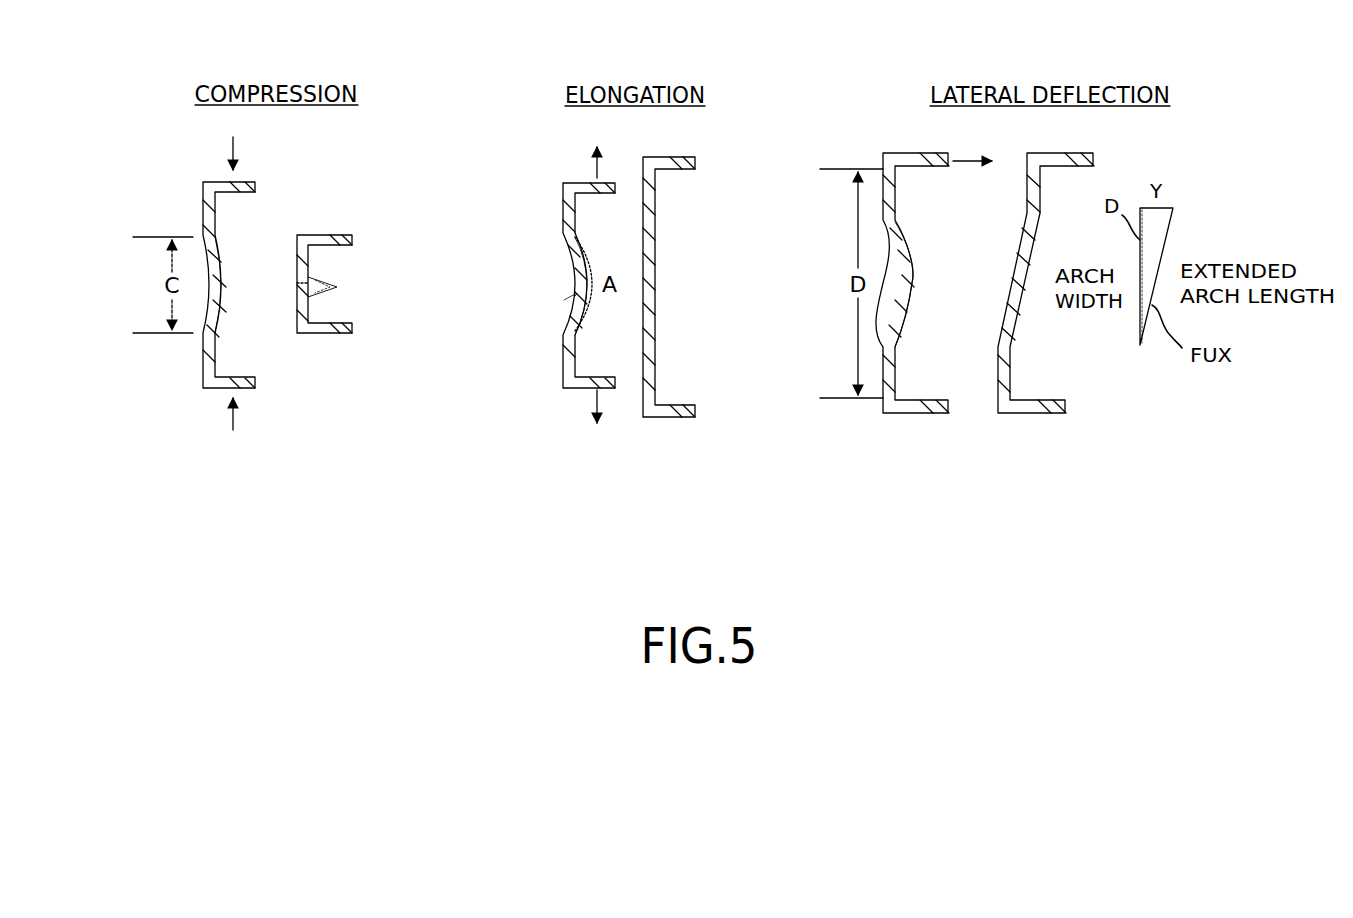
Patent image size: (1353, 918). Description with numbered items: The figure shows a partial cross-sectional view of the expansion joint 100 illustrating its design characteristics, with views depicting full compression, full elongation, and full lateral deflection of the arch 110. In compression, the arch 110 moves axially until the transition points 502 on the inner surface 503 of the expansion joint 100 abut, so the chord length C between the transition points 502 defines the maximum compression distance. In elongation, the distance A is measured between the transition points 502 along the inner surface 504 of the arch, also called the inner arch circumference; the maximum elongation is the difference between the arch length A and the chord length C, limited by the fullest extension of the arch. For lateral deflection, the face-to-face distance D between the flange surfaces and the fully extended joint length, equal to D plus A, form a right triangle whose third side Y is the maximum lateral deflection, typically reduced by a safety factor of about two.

The expansion joint 100 is at (202, 377).
The arch 110 is at (228, 270).
The transition points 502 is at (200, 236).
The inner surface 503 is at (202, 196).
The inner surface along the arch 504 is at (575, 297).